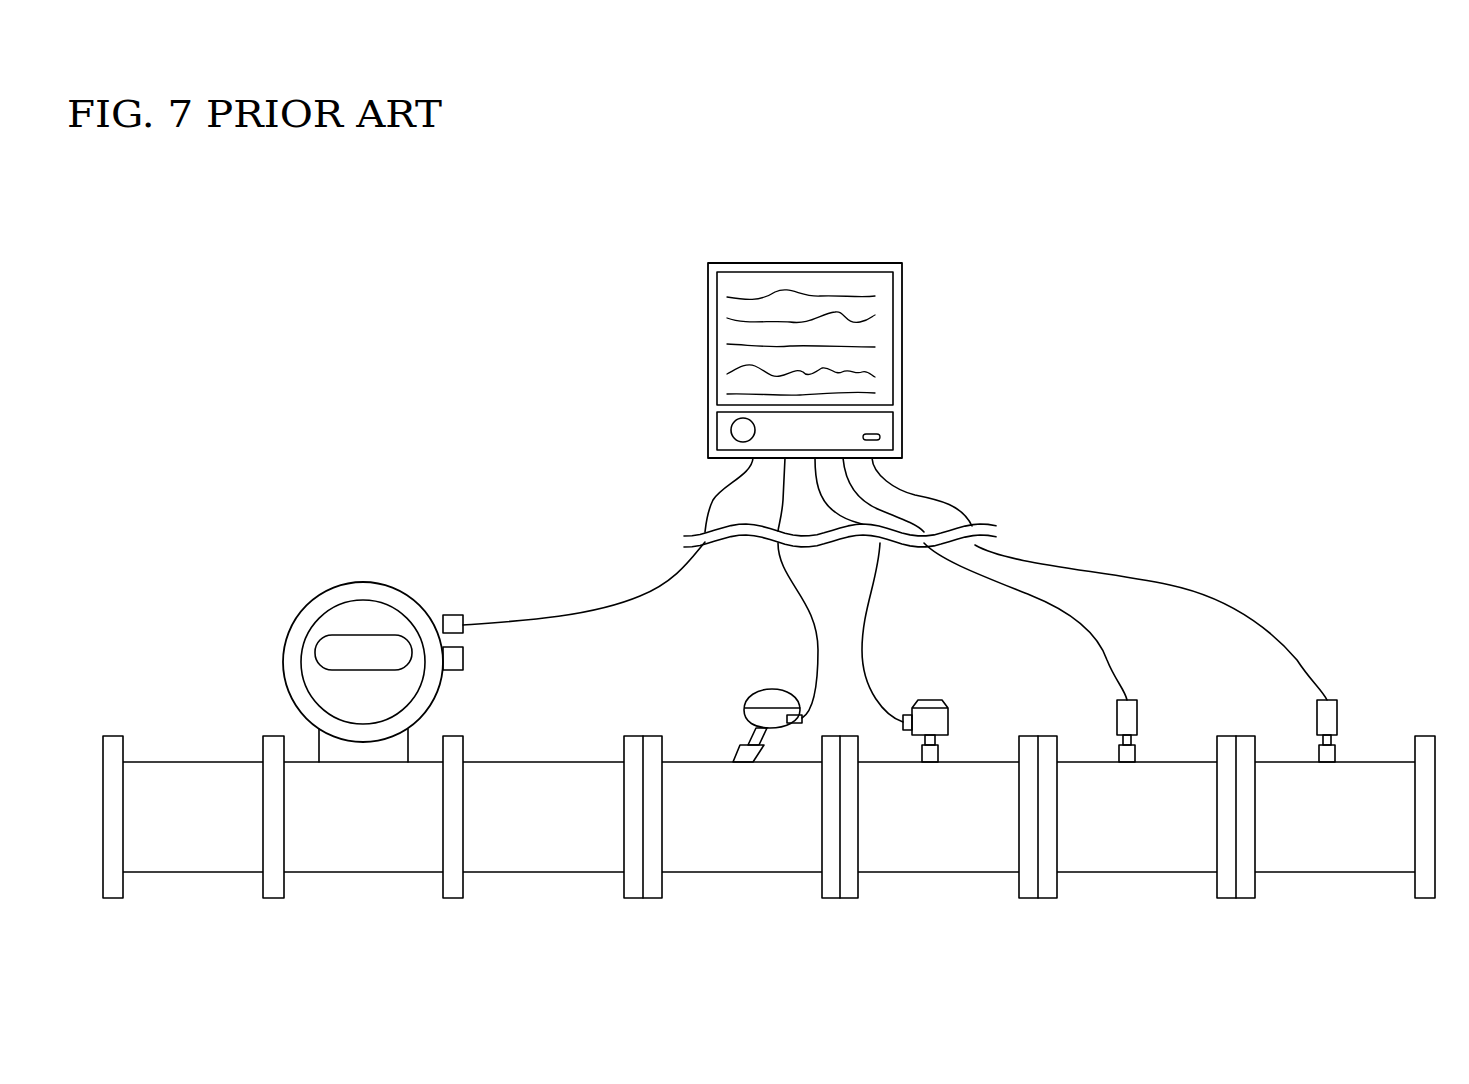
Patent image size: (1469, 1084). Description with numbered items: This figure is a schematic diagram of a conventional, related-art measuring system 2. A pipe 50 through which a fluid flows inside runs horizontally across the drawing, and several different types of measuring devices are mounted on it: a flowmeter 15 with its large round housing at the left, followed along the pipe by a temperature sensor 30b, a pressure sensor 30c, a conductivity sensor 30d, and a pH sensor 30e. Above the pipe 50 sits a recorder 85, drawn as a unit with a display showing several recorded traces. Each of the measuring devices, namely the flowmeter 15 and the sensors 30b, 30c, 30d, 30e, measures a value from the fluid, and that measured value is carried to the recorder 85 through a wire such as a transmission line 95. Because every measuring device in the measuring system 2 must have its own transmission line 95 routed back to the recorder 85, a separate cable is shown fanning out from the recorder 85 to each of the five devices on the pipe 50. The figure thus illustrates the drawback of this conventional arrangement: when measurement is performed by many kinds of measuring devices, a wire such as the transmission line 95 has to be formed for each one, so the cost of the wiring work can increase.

The measuring system 2 is at (1072, 248).
The flowmeter 15 is at (362, 582).
The temperature sensor 30b is at (772, 689).
The pressure sensor 30c is at (930, 699).
The conductivity sensor 30d is at (1138, 717).
The pH sensor 30e is at (1338, 717).
The pipe 50 is at (190, 760).
The recorder 85 is at (803, 263).
The transmission line 95 is at (549, 617).